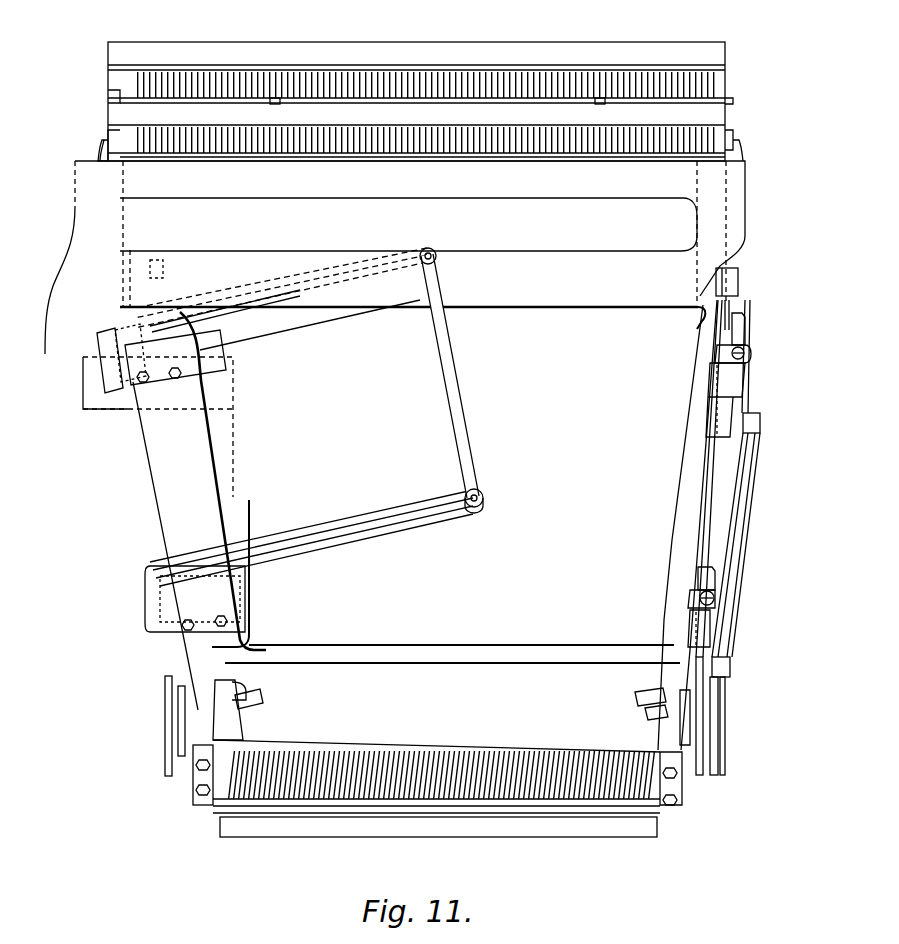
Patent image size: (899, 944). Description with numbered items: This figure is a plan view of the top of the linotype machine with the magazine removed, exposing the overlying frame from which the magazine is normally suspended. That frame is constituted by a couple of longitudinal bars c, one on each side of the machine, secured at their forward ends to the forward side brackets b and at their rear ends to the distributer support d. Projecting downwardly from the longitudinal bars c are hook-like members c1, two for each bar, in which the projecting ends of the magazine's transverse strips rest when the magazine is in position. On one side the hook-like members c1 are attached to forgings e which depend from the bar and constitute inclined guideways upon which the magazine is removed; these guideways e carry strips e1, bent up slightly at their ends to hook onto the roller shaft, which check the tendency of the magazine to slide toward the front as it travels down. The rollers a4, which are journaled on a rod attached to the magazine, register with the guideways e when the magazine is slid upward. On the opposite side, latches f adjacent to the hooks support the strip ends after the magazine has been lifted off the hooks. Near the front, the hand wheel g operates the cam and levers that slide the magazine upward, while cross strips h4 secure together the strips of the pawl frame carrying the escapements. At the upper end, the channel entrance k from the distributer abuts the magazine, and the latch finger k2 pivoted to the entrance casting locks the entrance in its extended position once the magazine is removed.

The channel entrance k is at (375, 50).
The latch finger k2 is at (723, 268).
The distributer support d is at (715, 214).
The longitudinal bars c is at (160, 475).
The hook-like members c1 is at (690, 676).
The inclined guideways e is at (200, 322).
The strips e1 is at (345, 553).
The rollers a4 is at (434, 254).
The latches f is at (746, 322).
The hand wheel g is at (718, 724).
The forward side brackets b is at (205, 742).
The cross strips h4 is at (222, 768).